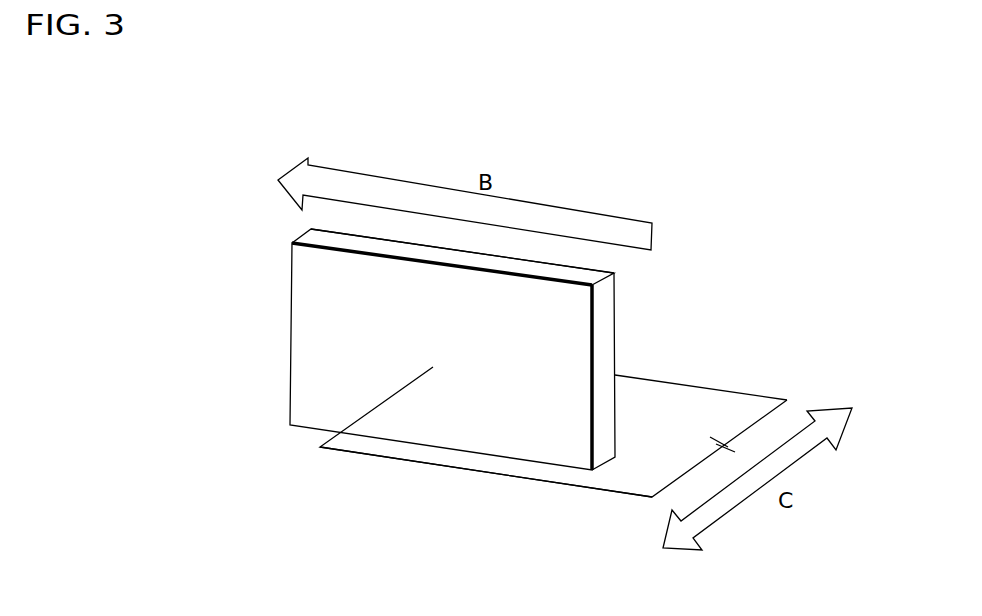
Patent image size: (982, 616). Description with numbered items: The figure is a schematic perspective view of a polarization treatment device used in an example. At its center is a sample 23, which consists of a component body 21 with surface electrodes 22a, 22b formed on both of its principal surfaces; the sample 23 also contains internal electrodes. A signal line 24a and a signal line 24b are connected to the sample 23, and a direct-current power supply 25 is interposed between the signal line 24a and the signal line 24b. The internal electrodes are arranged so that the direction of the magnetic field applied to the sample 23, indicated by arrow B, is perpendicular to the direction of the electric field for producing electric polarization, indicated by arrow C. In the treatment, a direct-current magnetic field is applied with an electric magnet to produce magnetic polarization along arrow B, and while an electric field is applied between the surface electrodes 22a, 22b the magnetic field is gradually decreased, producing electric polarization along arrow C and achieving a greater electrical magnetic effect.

The sample 23 is at (203, 212).
The component body 21 is at (318, 236).
The surface electrode 22a is at (304, 267).
The surface electrode 22b is at (333, 223).
The signal line 24a is at (689, 384).
The signal line 24b is at (553, 484).
The direct-current power supply 25 is at (733, 442).